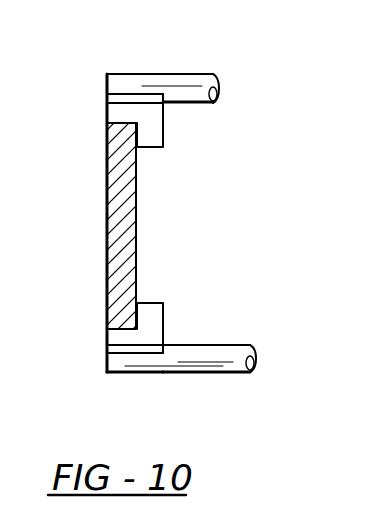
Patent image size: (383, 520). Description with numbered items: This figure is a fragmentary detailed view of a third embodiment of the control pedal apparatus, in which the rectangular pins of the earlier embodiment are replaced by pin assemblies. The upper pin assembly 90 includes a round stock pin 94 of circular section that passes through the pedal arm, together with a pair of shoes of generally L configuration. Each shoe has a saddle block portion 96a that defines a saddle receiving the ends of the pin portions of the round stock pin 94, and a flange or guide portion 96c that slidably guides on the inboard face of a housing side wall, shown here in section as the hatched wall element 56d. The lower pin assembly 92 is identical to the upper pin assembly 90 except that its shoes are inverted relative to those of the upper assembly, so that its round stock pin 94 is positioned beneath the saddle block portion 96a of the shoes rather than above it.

The pin assembly 90 is at (146, 74).
The pin assembly 92 is at (145, 373).
The round stock pin 94 is at (214, 75).
The saddle block portion 96a is at (107, 102).
The flange or guide portion 96c is at (163, 118).
The panel section 56d is at (107, 218).